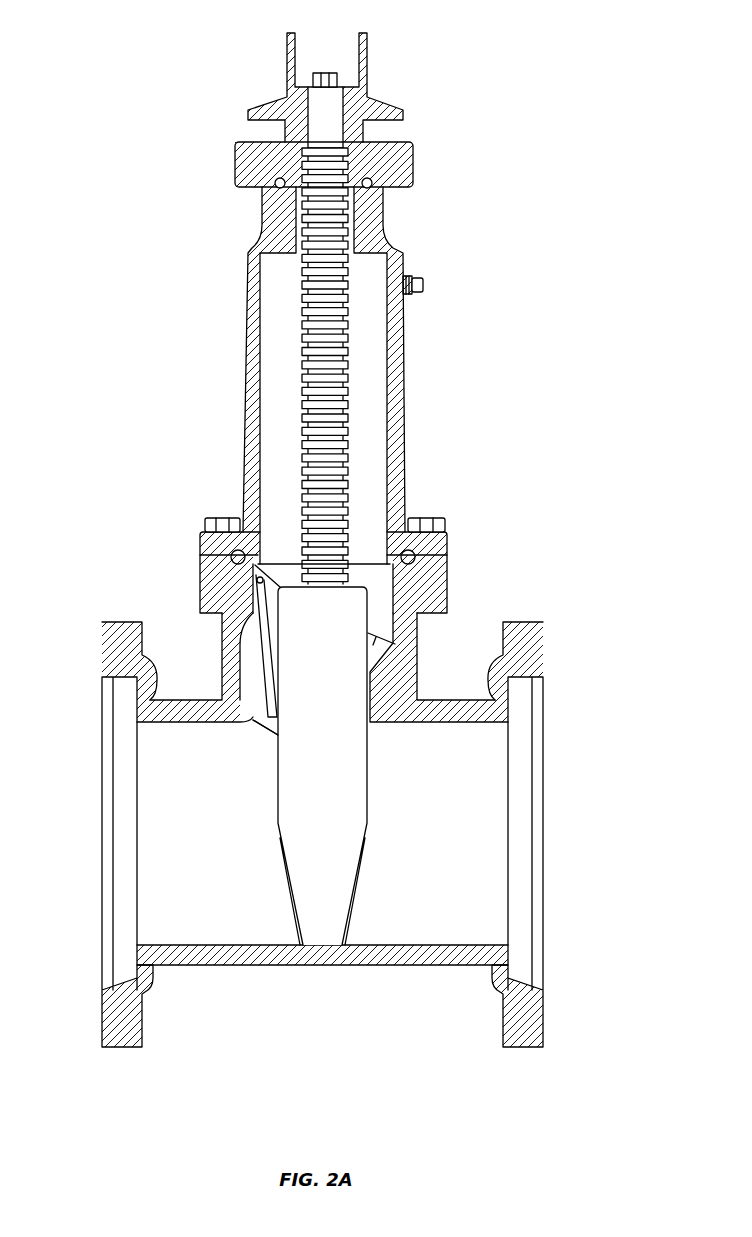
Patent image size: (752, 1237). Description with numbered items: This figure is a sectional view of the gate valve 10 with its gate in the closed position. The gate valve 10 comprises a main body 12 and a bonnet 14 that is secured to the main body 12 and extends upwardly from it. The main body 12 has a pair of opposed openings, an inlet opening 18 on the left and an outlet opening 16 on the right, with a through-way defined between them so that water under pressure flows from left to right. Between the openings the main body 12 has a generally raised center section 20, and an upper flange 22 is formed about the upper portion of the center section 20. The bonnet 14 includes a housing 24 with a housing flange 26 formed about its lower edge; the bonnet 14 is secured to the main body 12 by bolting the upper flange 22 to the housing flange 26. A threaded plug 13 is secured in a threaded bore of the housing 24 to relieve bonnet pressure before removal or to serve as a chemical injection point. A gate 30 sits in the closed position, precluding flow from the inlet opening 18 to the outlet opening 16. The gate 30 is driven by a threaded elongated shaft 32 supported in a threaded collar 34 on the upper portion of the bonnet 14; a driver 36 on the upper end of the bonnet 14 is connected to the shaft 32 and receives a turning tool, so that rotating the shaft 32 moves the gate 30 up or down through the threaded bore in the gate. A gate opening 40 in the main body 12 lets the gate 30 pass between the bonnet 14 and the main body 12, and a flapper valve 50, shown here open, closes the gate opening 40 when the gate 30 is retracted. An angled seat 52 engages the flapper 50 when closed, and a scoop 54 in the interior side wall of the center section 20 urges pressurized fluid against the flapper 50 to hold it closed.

The gate valve 10 is at (617, 203).
The main body 12 is at (390, 1025).
The threaded plug 13 is at (423, 285).
The bonnet 14 is at (540, 343).
The outlet opening 16 is at (540, 782).
The inlet opening 18 is at (103, 818).
The center section 20 is at (417, 653).
The upper flange 22 is at (447, 560).
The housing 24 is at (243, 390).
The housing flange 26 is at (448, 535).
The gate 30 is at (363, 842).
The threaded elongated shaft 32 is at (345, 435).
The threaded collar 34 is at (405, 173).
The driver 36 is at (363, 58).
The gate opening 40 is at (375, 575).
The flapper valve 50 is at (258, 738).
The angled seat 52 is at (375, 640).
The scoop 54 is at (253, 660).